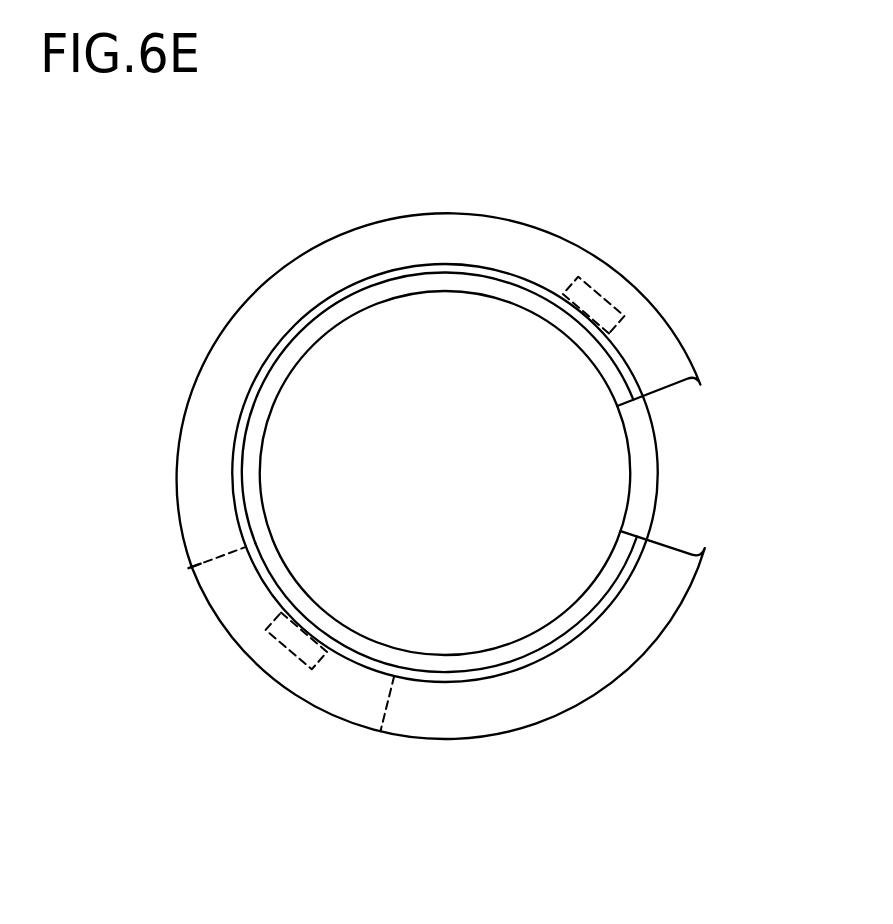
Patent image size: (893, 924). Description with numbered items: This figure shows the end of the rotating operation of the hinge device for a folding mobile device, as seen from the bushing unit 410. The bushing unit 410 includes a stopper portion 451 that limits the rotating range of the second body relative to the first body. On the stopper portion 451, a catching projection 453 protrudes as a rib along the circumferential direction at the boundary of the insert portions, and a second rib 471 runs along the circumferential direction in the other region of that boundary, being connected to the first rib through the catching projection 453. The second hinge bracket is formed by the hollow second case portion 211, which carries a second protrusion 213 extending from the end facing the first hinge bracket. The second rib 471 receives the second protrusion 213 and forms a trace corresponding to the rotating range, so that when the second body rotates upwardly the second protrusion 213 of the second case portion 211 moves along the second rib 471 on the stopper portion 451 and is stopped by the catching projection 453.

The bushing unit 410 is at (461, 167).
The second rib 471 is at (236, 348).
The stopper portion 451 is at (318, 724).
The catching projection 453 is at (390, 698).
The second case portion 211 is at (214, 544).
The second protrusion 213 is at (203, 562).